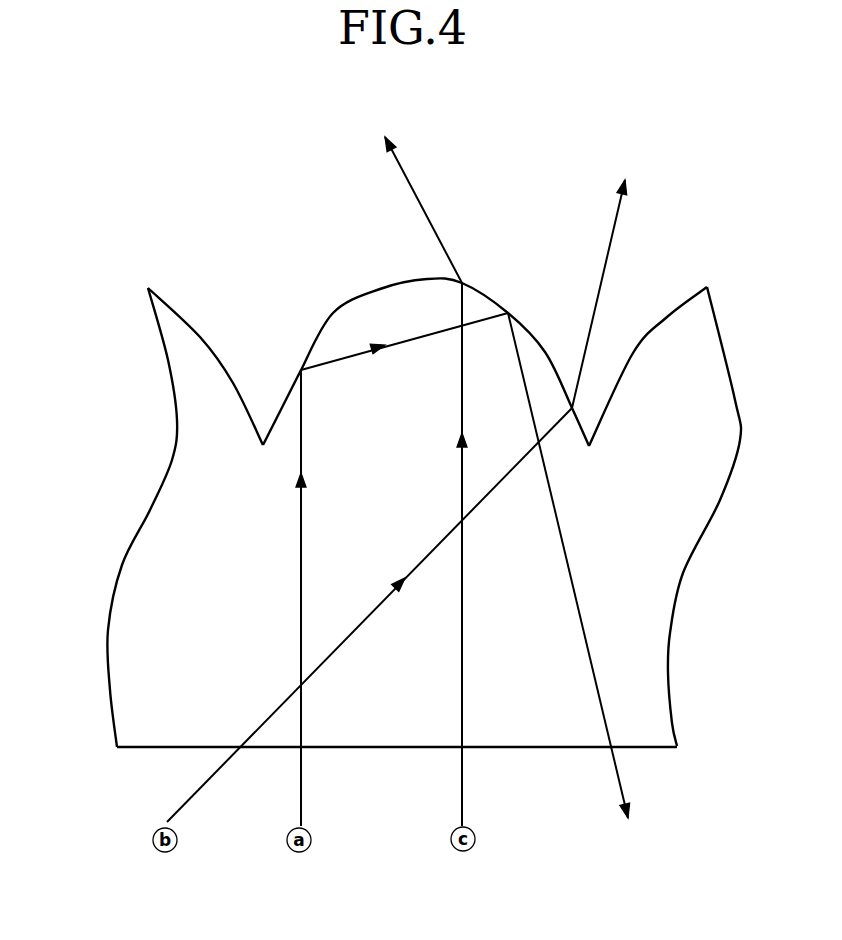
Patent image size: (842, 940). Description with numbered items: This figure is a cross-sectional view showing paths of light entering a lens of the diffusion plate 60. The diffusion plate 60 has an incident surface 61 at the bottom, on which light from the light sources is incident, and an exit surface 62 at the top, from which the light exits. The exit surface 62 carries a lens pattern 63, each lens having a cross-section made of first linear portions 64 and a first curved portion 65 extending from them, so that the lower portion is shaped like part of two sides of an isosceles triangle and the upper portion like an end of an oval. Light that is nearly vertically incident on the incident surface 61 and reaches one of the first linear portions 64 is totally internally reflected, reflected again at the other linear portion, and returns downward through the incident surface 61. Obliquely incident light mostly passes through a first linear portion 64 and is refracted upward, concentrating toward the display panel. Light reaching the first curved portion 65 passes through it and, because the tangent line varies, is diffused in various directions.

The diffusion plate 60 is at (388, 807).
The incident surface 61 is at (140, 748).
The exit surface 62 is at (708, 128).
The lens pattern 63 is at (414, 336).
The first linear portions 64 is at (292, 370).
The first curved portion 65 is at (333, 313).